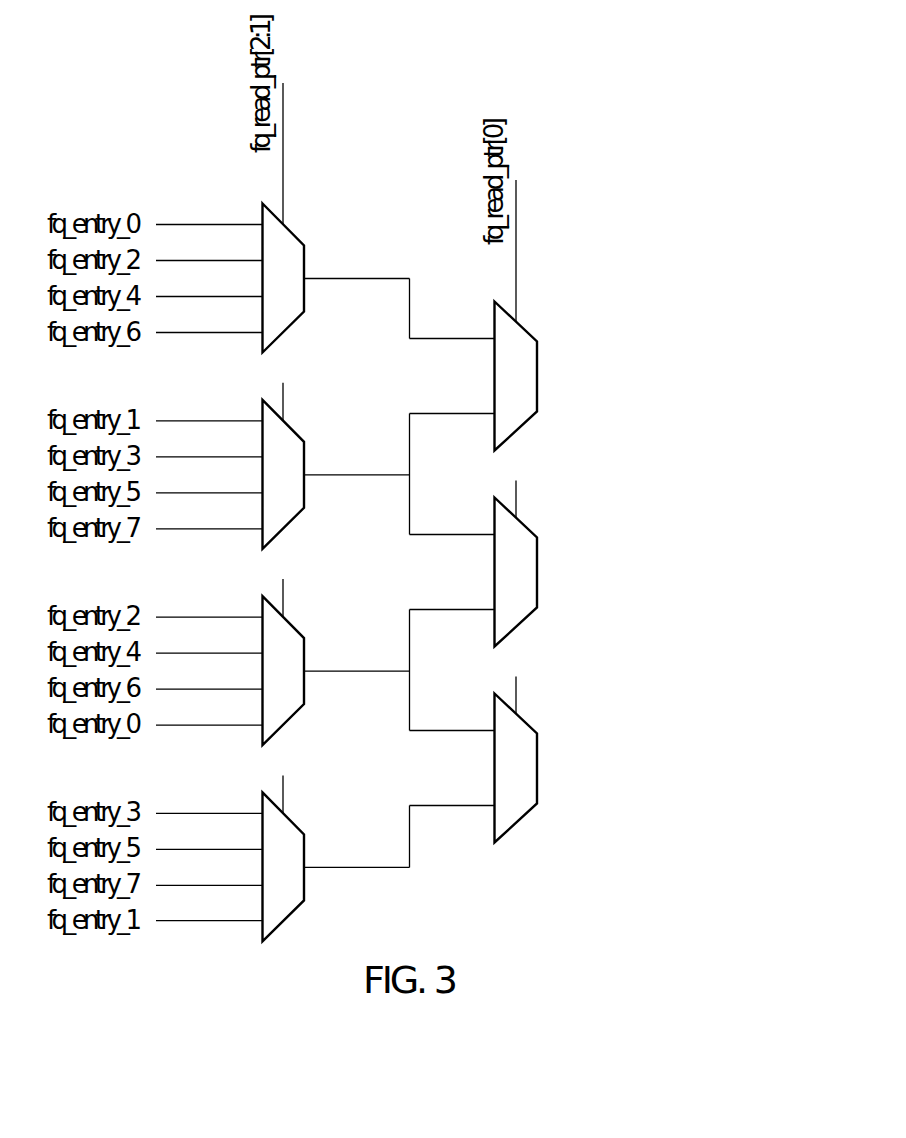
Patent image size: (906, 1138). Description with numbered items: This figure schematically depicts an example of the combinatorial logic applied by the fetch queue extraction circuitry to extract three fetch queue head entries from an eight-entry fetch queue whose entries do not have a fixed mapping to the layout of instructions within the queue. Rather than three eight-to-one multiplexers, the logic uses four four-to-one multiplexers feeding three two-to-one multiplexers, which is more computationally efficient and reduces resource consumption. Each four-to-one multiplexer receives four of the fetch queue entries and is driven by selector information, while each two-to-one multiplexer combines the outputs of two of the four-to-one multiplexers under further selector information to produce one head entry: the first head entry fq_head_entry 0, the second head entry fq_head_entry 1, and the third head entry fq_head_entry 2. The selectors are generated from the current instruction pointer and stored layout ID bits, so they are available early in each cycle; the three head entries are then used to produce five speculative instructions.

The fq_head_entry[0] output multiplexer 0 is at (770, 376).
The fq_head_entry[1] output multiplexer 1 is at (770, 572).
The fq_head_entry[2] output multiplexer 2 is at (770, 768).